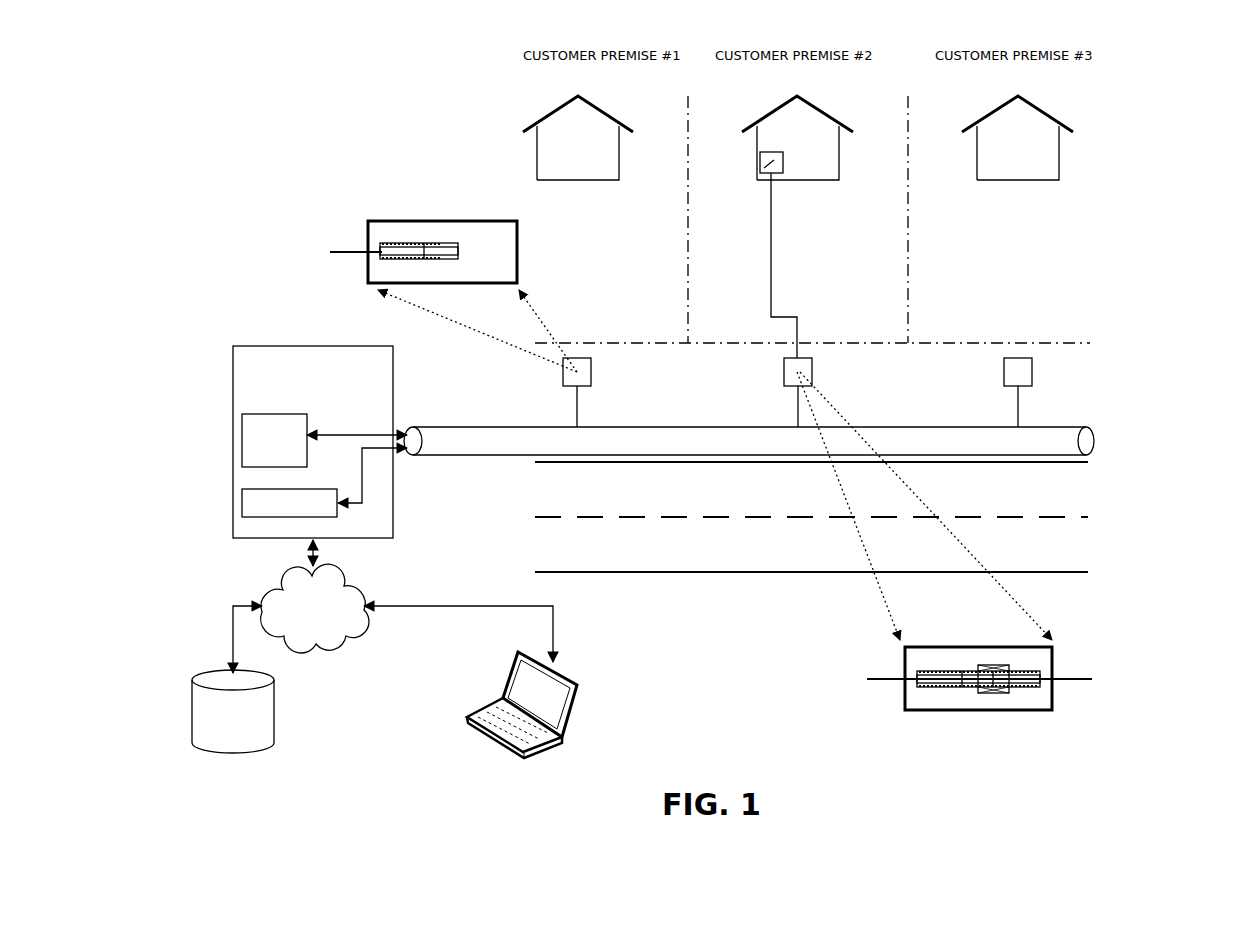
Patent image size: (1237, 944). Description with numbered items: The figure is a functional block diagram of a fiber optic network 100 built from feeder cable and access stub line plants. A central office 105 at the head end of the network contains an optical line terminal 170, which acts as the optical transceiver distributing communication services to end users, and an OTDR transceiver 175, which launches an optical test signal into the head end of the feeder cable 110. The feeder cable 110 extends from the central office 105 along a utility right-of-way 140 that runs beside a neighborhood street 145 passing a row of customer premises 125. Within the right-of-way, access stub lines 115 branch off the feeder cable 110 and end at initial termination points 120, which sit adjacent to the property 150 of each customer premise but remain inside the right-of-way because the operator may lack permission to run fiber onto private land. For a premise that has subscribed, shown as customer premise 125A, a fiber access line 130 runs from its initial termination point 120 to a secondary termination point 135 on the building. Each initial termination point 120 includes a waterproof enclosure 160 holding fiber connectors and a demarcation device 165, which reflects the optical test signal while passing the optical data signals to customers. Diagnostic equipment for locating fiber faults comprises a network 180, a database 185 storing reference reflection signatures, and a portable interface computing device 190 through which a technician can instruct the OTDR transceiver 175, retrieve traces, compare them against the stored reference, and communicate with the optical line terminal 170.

The fiber optic network 100 is at (1143, 143).
The central office 105 is at (313, 442).
The feeder cable 110 is at (749, 441).
The access stub lines 115 is at (577, 410).
The initial termination points 120 is at (591, 372).
The customer premises 125 is at (798, 138).
The customer premise 125A is at (797, 138).
The fiber access line 130 is at (772, 275).
The secondary termination point 135 is at (760, 171).
The utility right-of-way 140 is at (1100, 460).
The neighborhood street 145 is at (1100, 570).
The property 150 is at (812, 219).
The waterproof enclosure 160 is at (368, 232).
The demarcation device 165 is at (428, 245).
The optical line terminal 170 is at (324, 440).
The OTDR transceiver 175 is at (324, 482).
The network 180 is at (393, 606).
The database 185 is at (233, 711).
The interface computing device 190 is at (480, 740).